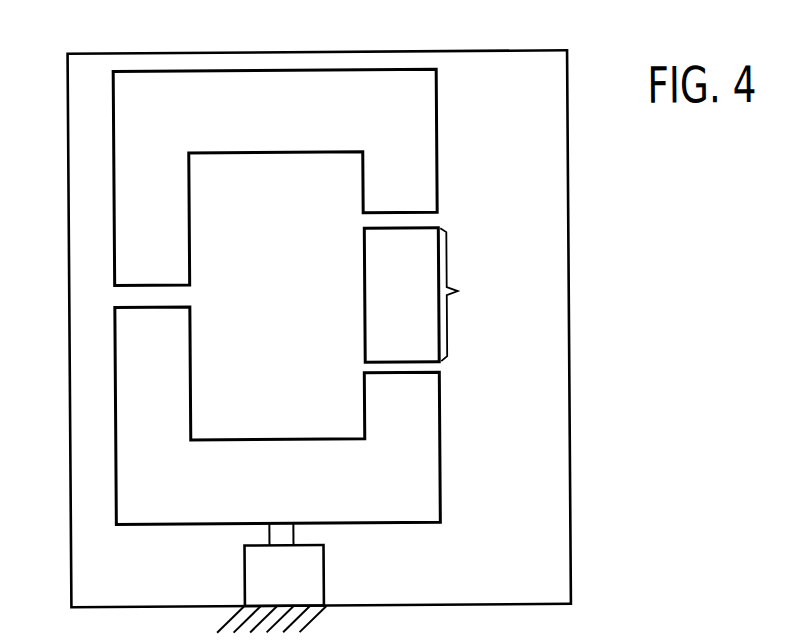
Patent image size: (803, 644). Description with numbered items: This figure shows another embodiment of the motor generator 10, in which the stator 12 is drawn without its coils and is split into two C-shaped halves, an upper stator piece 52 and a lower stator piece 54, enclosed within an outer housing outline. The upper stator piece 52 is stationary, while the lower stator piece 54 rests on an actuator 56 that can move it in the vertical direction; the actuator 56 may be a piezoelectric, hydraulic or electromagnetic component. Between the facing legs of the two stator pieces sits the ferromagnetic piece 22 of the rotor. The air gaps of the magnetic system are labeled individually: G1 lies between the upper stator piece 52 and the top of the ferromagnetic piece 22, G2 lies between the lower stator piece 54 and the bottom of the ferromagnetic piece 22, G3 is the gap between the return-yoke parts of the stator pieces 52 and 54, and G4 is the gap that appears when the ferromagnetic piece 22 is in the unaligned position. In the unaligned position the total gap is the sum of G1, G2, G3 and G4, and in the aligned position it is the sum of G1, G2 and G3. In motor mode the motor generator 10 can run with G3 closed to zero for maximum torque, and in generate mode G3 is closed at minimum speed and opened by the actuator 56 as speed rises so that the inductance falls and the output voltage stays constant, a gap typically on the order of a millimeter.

The motor generator 10 is at (68, 130).
The stator 12 is at (357, 64).
The upper stator piece 52 is at (290, 130).
The lower stator piece 54 is at (295, 494).
The ferromagnetic piece 22 is at (420, 310).
The actuator 56 is at (299, 592).
The air gap G1 is at (432, 221).
The air gap G2 is at (435, 368).
The air gap G3 is at (122, 296).
The air gap G4 is at (465, 294).